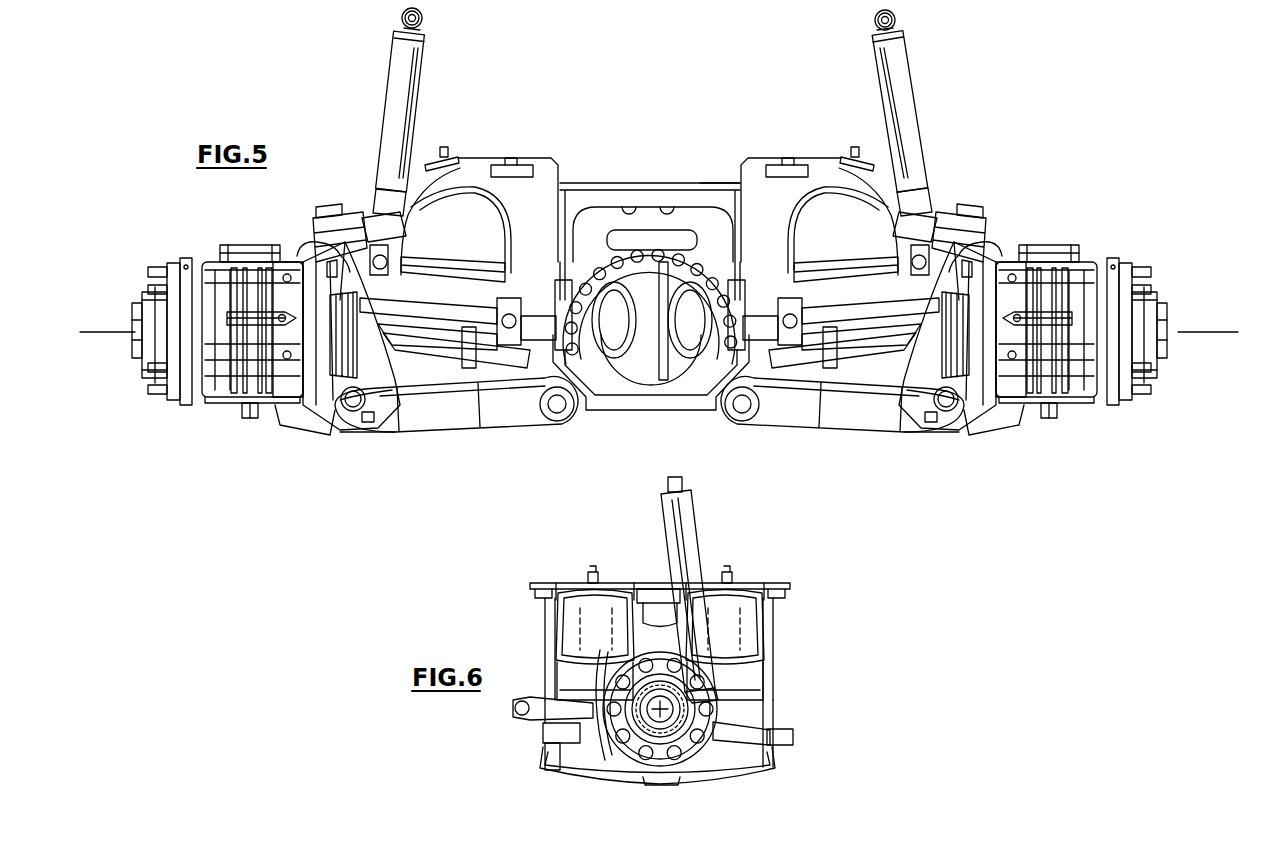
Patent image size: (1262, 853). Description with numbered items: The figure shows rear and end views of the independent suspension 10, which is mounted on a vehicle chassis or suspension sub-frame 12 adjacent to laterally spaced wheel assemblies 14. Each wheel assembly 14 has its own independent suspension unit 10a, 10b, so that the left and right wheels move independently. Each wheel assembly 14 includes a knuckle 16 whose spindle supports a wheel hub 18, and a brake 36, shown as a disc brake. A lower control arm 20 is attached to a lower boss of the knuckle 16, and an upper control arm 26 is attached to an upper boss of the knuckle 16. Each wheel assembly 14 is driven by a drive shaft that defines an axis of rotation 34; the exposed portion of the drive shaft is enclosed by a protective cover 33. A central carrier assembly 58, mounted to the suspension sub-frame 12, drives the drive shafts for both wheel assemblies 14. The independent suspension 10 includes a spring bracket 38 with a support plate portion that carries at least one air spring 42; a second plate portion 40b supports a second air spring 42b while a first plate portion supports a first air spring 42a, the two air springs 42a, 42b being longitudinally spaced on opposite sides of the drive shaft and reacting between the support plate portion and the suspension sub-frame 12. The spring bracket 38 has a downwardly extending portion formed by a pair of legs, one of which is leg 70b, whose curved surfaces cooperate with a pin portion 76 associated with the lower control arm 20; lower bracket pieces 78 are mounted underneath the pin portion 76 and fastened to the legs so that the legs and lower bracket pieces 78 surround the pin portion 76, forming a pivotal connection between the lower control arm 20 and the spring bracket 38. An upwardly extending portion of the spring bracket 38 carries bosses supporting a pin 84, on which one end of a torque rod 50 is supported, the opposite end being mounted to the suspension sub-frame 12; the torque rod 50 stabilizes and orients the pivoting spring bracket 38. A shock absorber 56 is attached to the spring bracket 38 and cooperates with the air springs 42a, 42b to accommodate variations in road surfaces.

In FIG. 5, the independent suspension 10 is at (768, 90).
In FIG. 5, the independent suspension unit 10a is at (367, 478).
In FIG. 5, the independent suspension unit 10b is at (942, 477).
In FIG. 5, the suspension sub-frame 12 is at (610, 190).
In FIG. 6, the suspension sub-frame 12 is at (792, 595).
In FIG. 5, the wheel assembly 14 is at (126, 248).
In FIG. 6, the wheel assembly 14 is at (835, 650).
In FIG. 5, the knuckle 16 is at (298, 248).
In FIG. 6, the knuckle 16 is at (718, 768).
In FIG. 5, the wheel hub 18 is at (188, 258).
In FIG. 6, the wheel hub 18 is at (688, 772).
In FIG. 5, the lower control arm 20 is at (467, 415).
In FIG. 5, the upper control arm 26 is at (356, 225).
In FIG. 5, the protective cover 33 is at (318, 212).
In FIG. 5, the axis of rotation 34 is at (1200, 331).
In FIG. 6, the axis of rotation 34 is at (640, 752).
In FIG. 5, the brake 36 is at (255, 415).
In FIG. 5, the spring bracket 38 is at (410, 352).
In FIG. 5, the second plate portion 40b is at (432, 302).
In FIG. 5, the air spring 42 is at (418, 170).
In FIG. 6, the air spring 42 is at (582, 588).
In FIG. 6, the first air spring 42a is at (763, 620).
In FIG. 5, the second air spring 42b is at (465, 217).
In FIG. 6, the second air spring 42b is at (578, 624).
In FIG. 5, the torque rod 50 is at (445, 270).
In FIG. 5, the shock absorber 56 is at (417, 72).
In FIG. 6, the shock absorber 56 is at (700, 530).
In FIG. 5, the central carrier assembly 58 is at (645, 372).
In FIG. 5, the leg 70b is at (385, 372).
In FIG. 5, the pin portion 76 is at (355, 413).
In FIG. 5, the lower bracket piece 78 is at (368, 423).
In FIG. 5, the pin 84 is at (400, 250).